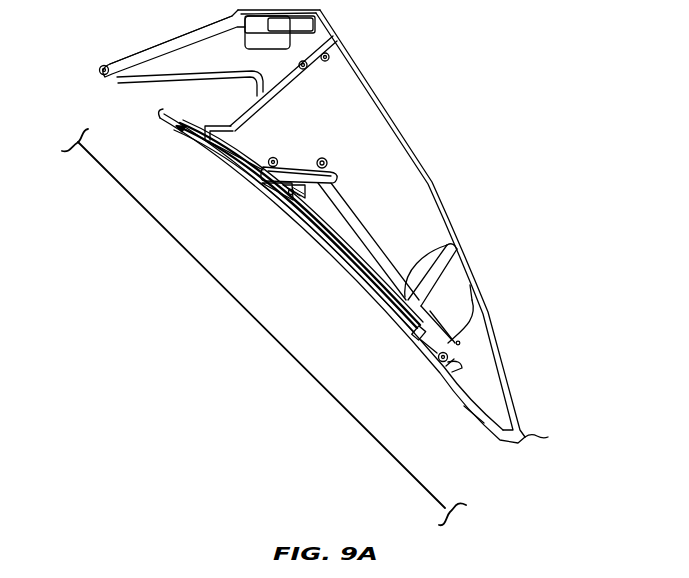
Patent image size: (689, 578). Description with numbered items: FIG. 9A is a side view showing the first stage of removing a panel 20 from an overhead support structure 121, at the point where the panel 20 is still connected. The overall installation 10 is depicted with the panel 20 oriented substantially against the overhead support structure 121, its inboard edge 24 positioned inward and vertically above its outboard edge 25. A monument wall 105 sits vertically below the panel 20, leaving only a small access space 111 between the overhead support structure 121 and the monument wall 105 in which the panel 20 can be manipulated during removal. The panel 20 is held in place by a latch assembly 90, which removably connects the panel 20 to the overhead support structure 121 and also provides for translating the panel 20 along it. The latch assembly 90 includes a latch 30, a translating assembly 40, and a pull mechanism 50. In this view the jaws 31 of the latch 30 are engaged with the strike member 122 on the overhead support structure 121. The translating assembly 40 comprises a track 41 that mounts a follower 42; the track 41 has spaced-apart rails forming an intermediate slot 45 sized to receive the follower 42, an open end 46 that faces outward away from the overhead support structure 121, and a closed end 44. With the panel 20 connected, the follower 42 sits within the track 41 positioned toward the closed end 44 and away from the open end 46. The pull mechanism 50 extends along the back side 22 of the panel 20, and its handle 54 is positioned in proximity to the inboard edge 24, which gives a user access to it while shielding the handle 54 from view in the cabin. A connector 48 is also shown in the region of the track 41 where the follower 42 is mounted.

The seat assembly 10 is at (201, 172).
The panel 20 is at (342, 267).
The back side 22 is at (480, 412).
The inboard edge 24 is at (162, 117).
The outboard edge 25 is at (548, 437).
The latch 30 is at (440, 346).
The jaws 31 is at (447, 365).
The translating assembly 40 is at (319, 150).
The track 41 is at (292, 170).
The follower 42 is at (337, 228).
The closed end 44 is at (331, 182).
The intermediate slot 45 is at (310, 156).
The open end 46 is at (231, 122).
The connector 48 is at (334, 204).
The pull mechanism 50 is at (244, 183).
The handle 54 is at (178, 124).
The latch assembly 90 is at (354, 298).
The monument wall 105 is at (204, 332).
The access space 111 is at (387, 347).
The overhead support structure 121 is at (382, 152).
The strike member 122 is at (445, 356).